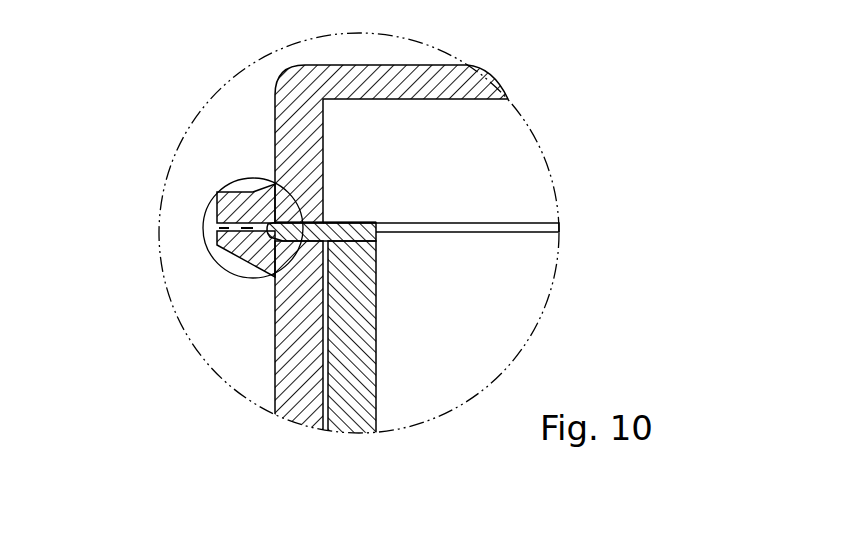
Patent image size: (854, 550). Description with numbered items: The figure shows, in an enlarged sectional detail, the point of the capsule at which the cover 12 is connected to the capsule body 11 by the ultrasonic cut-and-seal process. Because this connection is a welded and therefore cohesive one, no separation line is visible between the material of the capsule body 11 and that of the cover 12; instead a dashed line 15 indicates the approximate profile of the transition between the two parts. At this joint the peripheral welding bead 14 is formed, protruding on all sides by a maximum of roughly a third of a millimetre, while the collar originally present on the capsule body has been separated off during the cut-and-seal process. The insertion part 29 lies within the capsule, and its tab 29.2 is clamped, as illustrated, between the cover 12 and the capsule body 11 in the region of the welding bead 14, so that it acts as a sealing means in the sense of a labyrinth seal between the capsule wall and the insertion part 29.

The capsule body 11 is at (302, 358).
The cover 12 is at (370, 68).
The peripheral welding bead 14 is at (202, 210).
The dashed line 15 is at (222, 232).
The insertion part 29 is at (360, 388).
The tab 29.2 is at (375, 260).